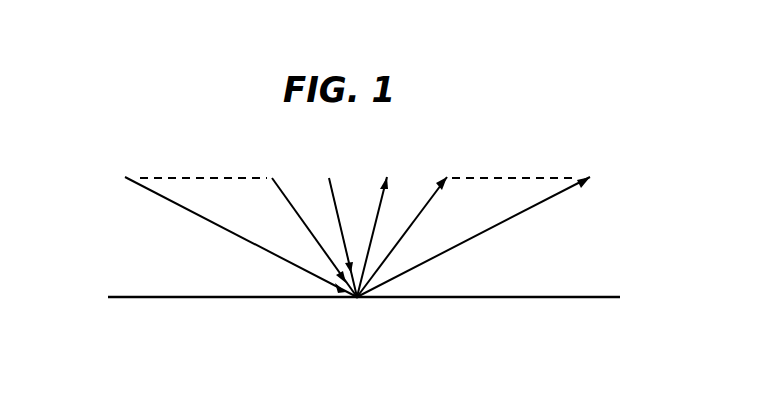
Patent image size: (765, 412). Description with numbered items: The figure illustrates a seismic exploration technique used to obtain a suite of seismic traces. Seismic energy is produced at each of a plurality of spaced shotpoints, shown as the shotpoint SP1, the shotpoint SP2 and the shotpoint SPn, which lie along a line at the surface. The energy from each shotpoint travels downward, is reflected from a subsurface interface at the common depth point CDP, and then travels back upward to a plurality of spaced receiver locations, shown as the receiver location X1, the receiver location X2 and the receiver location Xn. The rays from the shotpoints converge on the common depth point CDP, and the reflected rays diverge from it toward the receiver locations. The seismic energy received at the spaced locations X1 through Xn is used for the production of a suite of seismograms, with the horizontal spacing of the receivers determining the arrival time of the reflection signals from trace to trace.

The shotpoint SPn is at (231, 222).
The shotpoint SP2 is at (304, 222).
The shotpoint SP1 is at (333, 222).
The receiver location X1 is at (380, 222).
The receiver location X2 is at (465, 222).
The receiver location Xn is at (481, 222).
The common depth point CDP is at (357, 311).